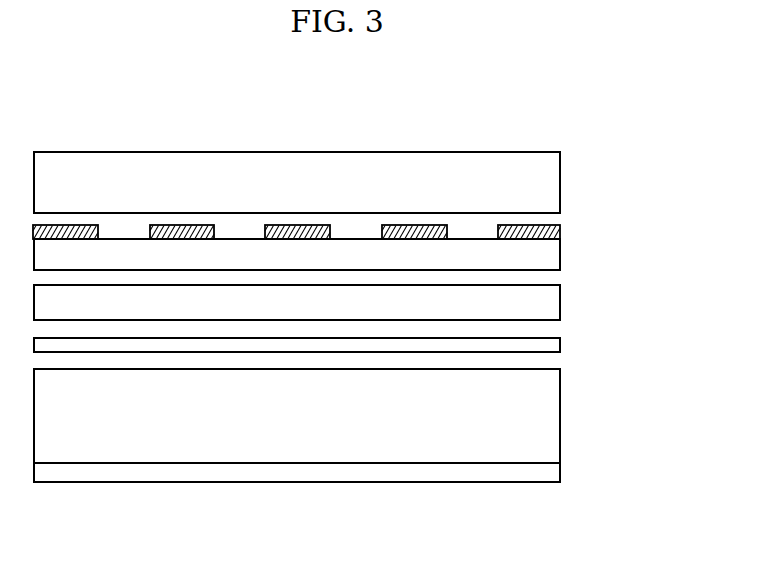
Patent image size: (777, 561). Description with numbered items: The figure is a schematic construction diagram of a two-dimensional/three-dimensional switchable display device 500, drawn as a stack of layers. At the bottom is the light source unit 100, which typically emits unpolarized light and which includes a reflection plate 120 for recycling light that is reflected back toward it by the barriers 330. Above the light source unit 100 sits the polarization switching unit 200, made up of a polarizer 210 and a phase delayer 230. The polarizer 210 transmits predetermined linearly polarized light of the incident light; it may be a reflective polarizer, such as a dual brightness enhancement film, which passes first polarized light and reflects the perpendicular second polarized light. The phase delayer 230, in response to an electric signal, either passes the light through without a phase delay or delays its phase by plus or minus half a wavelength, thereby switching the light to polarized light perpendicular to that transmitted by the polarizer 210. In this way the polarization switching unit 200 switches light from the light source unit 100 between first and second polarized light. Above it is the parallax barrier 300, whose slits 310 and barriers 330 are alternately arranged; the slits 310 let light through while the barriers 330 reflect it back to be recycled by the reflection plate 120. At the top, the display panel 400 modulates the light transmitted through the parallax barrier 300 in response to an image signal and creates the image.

The 2D/3D switchable display device 500 is at (585, 132).
The display panel 400 is at (548, 182).
The parallax barrier 300 is at (366, 244).
The slits 310 is at (473, 238).
The barriers 330 is at (560, 233).
The polarization switching unit 200 is at (367, 321).
The phase delayer 230 is at (548, 300).
The polarizer 210 is at (548, 346).
The light source unit 100 is at (548, 414).
The reflection plate 120 is at (548, 472).